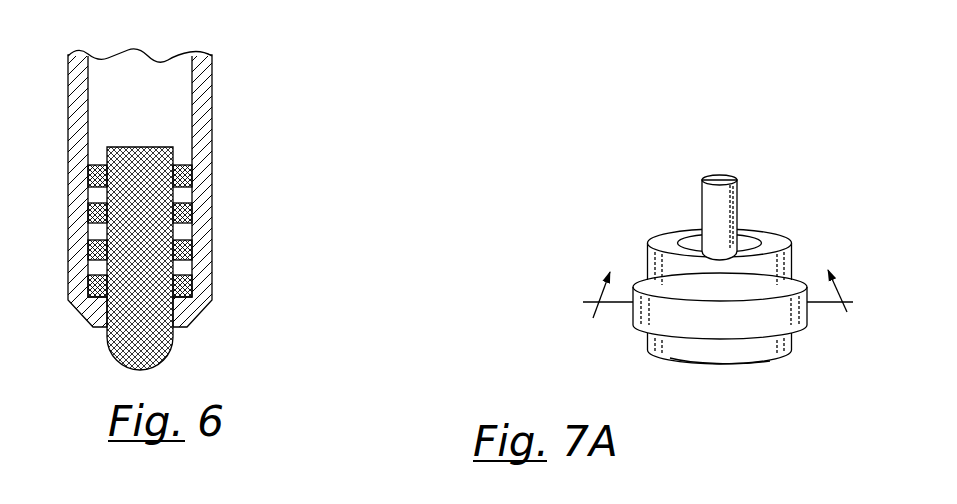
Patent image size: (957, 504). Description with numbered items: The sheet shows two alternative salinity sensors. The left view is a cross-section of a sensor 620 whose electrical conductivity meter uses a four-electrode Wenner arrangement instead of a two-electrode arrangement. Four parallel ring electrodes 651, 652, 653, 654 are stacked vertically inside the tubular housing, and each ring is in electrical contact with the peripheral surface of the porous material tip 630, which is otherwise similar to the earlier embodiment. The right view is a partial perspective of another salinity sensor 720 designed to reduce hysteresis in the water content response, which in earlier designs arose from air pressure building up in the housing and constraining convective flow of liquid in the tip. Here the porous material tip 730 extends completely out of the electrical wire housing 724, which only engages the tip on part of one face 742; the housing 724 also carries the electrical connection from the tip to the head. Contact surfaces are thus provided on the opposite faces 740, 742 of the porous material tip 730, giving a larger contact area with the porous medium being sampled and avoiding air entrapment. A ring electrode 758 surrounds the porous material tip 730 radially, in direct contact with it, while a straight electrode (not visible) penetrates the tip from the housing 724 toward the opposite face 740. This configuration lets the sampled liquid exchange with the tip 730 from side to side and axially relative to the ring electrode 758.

In FIG. 6, the sensor tip assembly 620 is at (232, 187).
In FIG. 6, the porous material tip 630 is at (178, 341).
In FIG. 6, the ring electrode 651 is at (192, 176).
In FIG. 6, the ring electrode 652 is at (192, 213).
In FIG. 6, the ring electrode 653 is at (192, 250).
In FIG. 6, the ring electrode 654 is at (192, 286).
In FIG. 7A, the salinity sensor 720 is at (673, 301).
In FIG. 7A, the electrical wire housing 724 is at (739, 212).
In FIG. 7A, the porous material tip 730 is at (770, 362).
In FIG. 7A, the face 740 is at (673, 362).
In FIG. 7A, the face 742 is at (665, 232).
In FIG. 7A, the ring electrode 758 is at (810, 318).